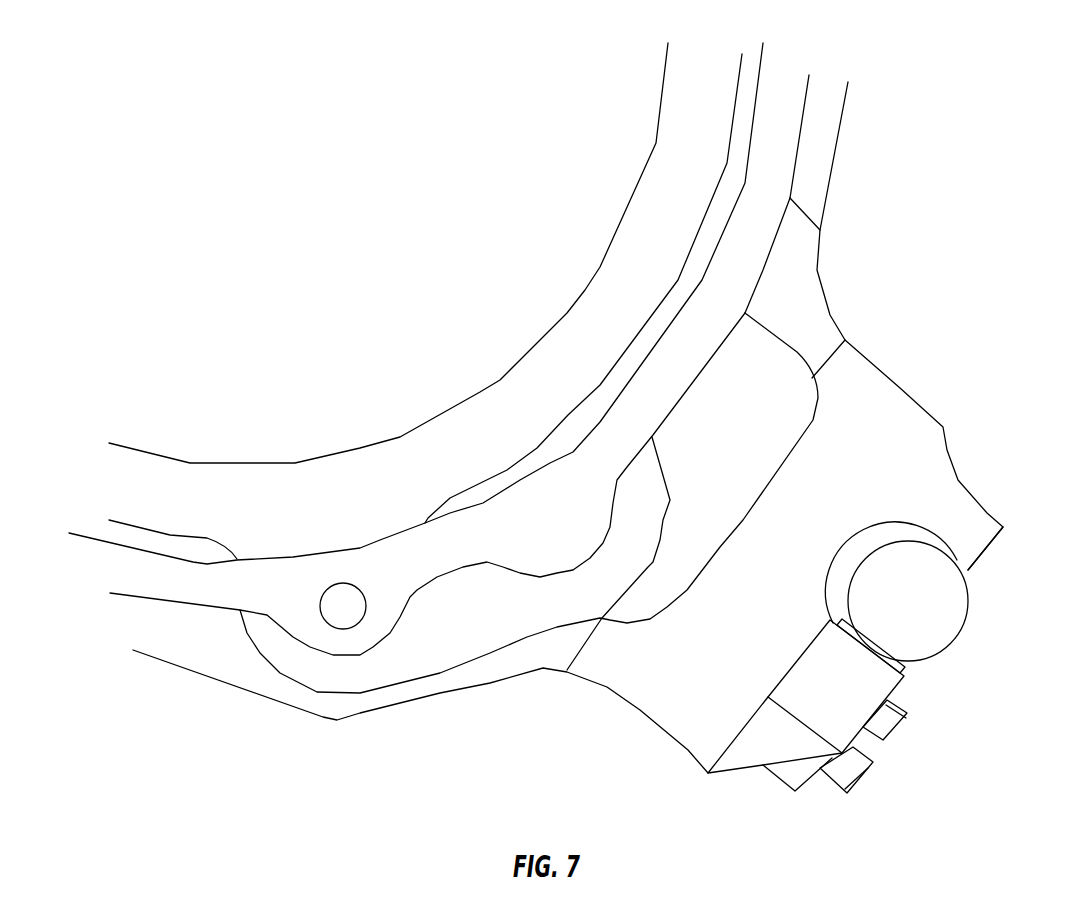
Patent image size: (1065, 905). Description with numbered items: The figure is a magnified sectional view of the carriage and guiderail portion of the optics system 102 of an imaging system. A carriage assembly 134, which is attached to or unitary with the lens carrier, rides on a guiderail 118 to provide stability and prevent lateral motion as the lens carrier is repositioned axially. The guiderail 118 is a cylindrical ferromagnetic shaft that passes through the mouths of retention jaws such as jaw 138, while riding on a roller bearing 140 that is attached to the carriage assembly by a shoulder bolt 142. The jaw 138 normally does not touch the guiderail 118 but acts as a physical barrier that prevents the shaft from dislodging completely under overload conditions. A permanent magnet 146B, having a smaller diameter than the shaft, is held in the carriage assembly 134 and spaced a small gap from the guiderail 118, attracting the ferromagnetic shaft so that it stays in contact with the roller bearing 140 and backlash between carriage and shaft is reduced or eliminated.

The optics system 102 is at (918, 187).
The carriage assembly 134 is at (940, 367).
The jaw 138 is at (980, 517).
The guiderail 118 is at (960, 617).
The roller bearing 140 is at (897, 668).
The shoulder bolt 142 is at (867, 783).
The permanent magnet 146B is at (852, 700).